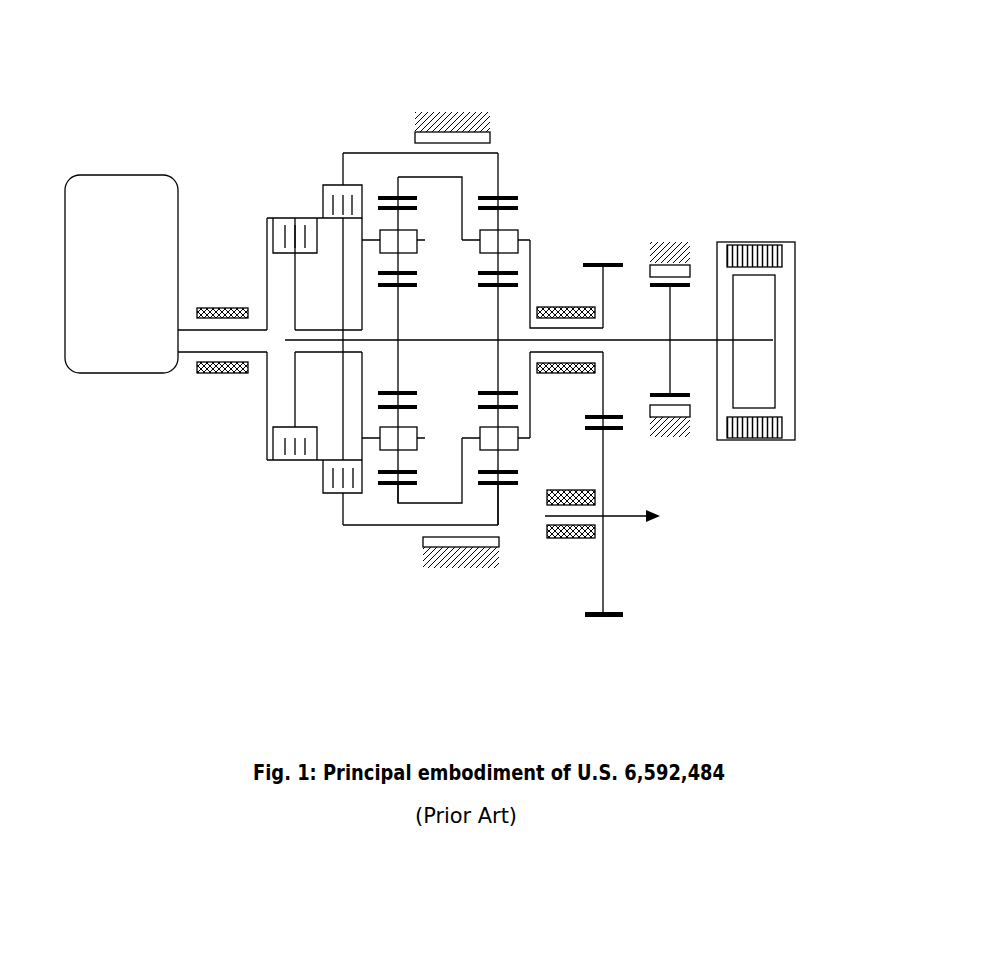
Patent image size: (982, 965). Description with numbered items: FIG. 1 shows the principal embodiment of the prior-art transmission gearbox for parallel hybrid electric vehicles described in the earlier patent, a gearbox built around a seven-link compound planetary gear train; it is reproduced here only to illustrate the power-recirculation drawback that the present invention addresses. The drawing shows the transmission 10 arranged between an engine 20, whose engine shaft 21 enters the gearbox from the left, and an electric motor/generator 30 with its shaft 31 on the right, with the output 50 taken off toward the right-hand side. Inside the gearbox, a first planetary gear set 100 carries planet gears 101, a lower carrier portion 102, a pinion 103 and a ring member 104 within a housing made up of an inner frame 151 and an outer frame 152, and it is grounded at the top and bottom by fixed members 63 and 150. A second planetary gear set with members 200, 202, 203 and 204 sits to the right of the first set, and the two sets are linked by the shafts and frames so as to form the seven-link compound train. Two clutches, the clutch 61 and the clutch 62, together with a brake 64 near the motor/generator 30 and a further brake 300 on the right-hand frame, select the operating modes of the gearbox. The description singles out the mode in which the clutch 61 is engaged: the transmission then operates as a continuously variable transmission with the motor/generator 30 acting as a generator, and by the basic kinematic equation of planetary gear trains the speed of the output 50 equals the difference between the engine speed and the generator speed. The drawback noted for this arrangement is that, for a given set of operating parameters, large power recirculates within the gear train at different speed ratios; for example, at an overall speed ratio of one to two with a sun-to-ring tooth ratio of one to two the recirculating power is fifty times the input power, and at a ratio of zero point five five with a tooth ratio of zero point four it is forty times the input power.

The transmission 10 is at (377, 512).
The engine 20 is at (103, 373).
The engine output shaft 21 is at (190, 353).
The electric motor/generator 30 is at (797, 374).
The motor shaft/rotor 31 is at (693, 343).
The output 50 is at (623, 520).
The clutch 61 is at (293, 220).
The second clutch 62 is at (338, 190).
The fixed ground (upper) 63 is at (462, 118).
The brake 64 is at (669, 242).
The first planetary gear set 100 is at (393, 160).
The planet gears 101 is at (492, 392).
The planet carrier (lower) 102 is at (403, 490).
The planet pinion 103 is at (373, 442).
The ring gear 104 is at (365, 300).
The fixed ground (lower) 150 is at (450, 505).
The input frame/housing 151 is at (265, 280).
The outer frame 152 is at (365, 150).
The second planetary gear set carrier 200 is at (512, 176).
The second planetary gear member 202 is at (510, 490).
The second planetary pinion 203 is at (518, 443).
The second ring gear/frame 204 is at (530, 270).
The brake 300 is at (603, 248).